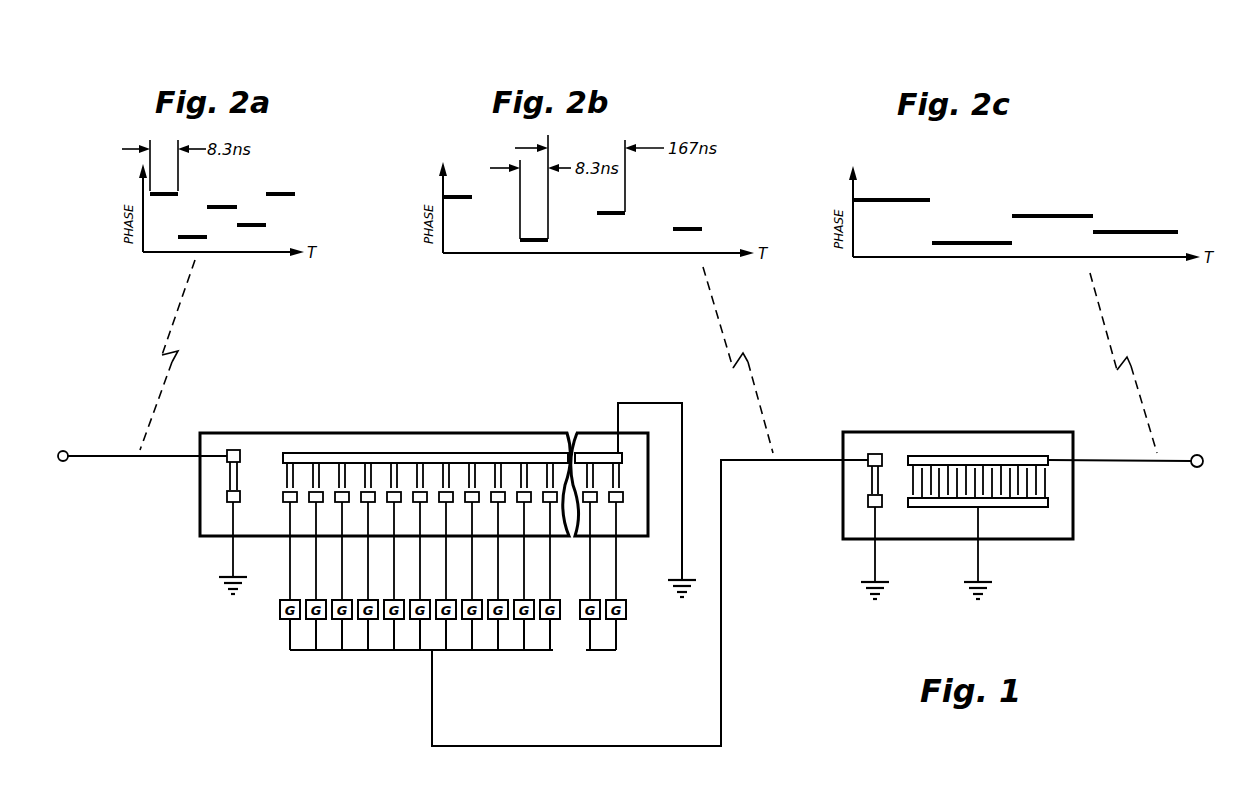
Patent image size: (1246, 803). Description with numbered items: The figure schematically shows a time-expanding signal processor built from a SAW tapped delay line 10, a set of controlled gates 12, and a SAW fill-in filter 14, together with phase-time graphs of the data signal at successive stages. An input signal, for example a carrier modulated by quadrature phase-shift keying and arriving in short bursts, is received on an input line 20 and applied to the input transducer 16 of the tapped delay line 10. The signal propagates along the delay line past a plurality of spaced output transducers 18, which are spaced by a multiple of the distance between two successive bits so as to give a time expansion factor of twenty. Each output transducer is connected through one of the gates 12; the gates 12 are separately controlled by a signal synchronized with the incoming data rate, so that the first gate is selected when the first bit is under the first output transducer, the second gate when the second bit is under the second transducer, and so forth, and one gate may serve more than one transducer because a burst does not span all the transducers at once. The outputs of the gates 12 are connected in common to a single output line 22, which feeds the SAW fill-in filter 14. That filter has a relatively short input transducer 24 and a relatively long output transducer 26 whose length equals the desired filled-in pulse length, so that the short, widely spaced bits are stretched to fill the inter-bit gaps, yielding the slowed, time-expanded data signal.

The SAW tapped delay line 10 is at (448, 493).
The controlled gates 12 is at (268, 628).
The SAW fill-in filter 14 is at (994, 492).
The input transducer 16 is at (248, 472).
The output transducers 18 is at (320, 475).
The input line 20 is at (93, 458).
The output line 22 is at (722, 712).
The input transducer 24 is at (871, 484).
The output transducer 26 is at (962, 456).